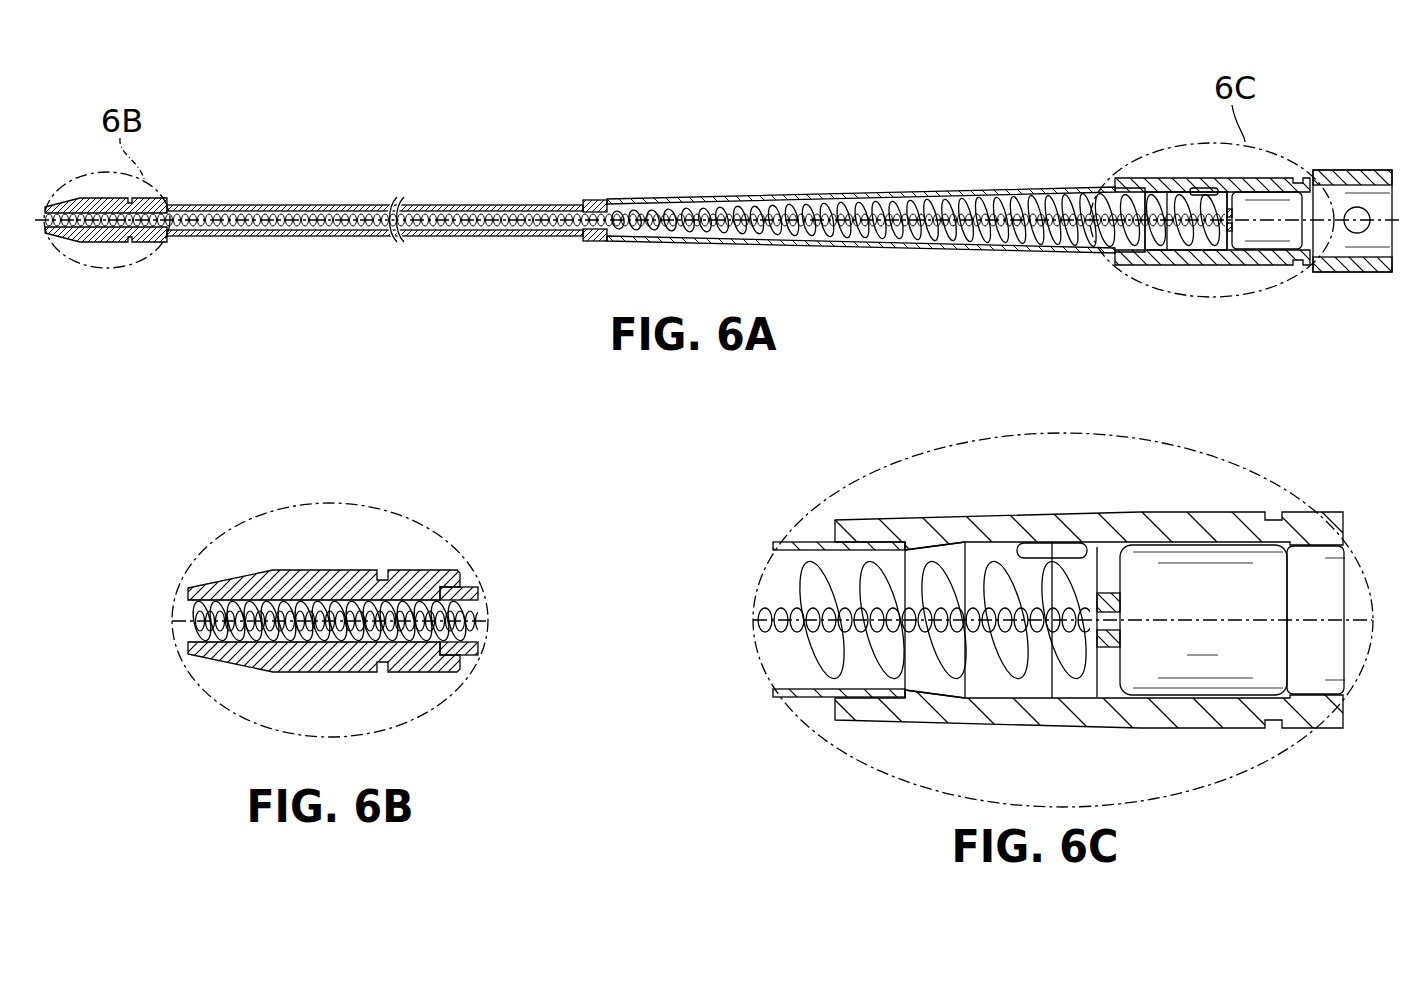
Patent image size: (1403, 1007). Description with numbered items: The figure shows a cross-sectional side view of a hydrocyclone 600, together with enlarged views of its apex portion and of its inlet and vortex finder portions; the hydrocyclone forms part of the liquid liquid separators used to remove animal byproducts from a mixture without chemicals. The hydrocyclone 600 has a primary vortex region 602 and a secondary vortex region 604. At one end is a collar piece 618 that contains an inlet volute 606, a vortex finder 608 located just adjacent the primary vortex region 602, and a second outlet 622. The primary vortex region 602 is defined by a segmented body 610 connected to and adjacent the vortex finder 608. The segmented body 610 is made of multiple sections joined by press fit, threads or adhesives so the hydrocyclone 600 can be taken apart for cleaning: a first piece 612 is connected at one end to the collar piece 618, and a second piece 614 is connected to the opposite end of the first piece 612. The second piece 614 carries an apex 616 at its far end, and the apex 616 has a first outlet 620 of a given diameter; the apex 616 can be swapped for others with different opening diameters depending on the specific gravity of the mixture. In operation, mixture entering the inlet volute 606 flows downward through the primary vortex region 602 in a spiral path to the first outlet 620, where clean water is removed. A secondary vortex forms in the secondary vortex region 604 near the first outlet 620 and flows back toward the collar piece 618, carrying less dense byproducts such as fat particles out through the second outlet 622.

In FIG. 6A, the hydrocyclone 600 is at (949, 126).
In FIG. 6A, the primary vortex region 602 is at (896, 252).
In FIG. 6C, the primary vortex region 602 is at (860, 560).
In FIG. 6A, the secondary vortex region 604 is at (822, 215).
In FIG. 6B, the secondary vortex region 604 is at (334, 621).
In FIG. 6C, the secondary vortex region 604 is at (833, 637).
In FIG. 6A, the inlet volute 606 is at (1196, 187).
In FIG. 6C, the inlet volute 606 is at (1065, 548).
In FIG. 6A, the vortex finder 608 is at (1186, 221).
In FIG. 6C, the vortex finder 608 is at (922, 548).
In FIG. 6A, the segmented body 610 is at (628, 176).
In FIG. 6A, the first piece 612 is at (745, 199).
In FIG. 6A, the second piece 614 is at (478, 205).
In FIG. 6A, the apex 616 is at (150, 197).
In FIG. 6B, the apex 616 is at (333, 621).
In FIG. 6A, the collar piece 618 is at (1360, 171).
In FIG. 6B, the first outlet 620 is at (186, 600).
In FIG. 6A, the second outlet 622 is at (1229, 220).
In FIG. 6C, the second outlet 622 is at (1103, 648).